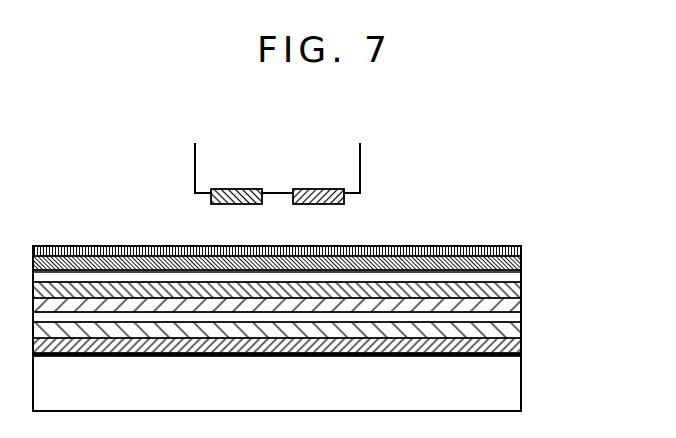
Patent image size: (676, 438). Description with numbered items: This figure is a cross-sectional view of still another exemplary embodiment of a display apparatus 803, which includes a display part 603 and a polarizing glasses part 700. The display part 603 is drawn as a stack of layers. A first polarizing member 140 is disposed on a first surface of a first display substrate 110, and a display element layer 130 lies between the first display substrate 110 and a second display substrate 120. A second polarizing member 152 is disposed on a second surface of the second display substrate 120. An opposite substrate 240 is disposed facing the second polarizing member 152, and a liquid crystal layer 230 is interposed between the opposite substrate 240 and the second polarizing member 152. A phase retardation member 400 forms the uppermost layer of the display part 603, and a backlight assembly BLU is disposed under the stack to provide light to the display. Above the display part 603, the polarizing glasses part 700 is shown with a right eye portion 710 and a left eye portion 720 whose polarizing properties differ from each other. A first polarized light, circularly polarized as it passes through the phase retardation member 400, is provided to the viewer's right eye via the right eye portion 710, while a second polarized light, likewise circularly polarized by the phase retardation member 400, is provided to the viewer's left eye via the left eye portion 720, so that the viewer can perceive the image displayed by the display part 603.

The display apparatus 803 is at (488, 153).
The polarizing glasses part 700 is at (362, 176).
The right eye portion 710 is at (233, 188).
The left eye portion 720 is at (318, 188).
The display part 603 is at (463, 246).
The phase retardation member 400 is at (521, 247).
The opposite substrate 240 is at (521, 262).
The liquid crystal layer 230 is at (521, 272).
The second polarizing member 152 is at (521, 290).
The second display substrate 120 is at (521, 305).
The display element layer 130 is at (521, 330).
The first display substrate 110 is at (521, 333).
The first polarizing member 140 is at (521, 353).
The backlight assembly BLU is at (521, 392).